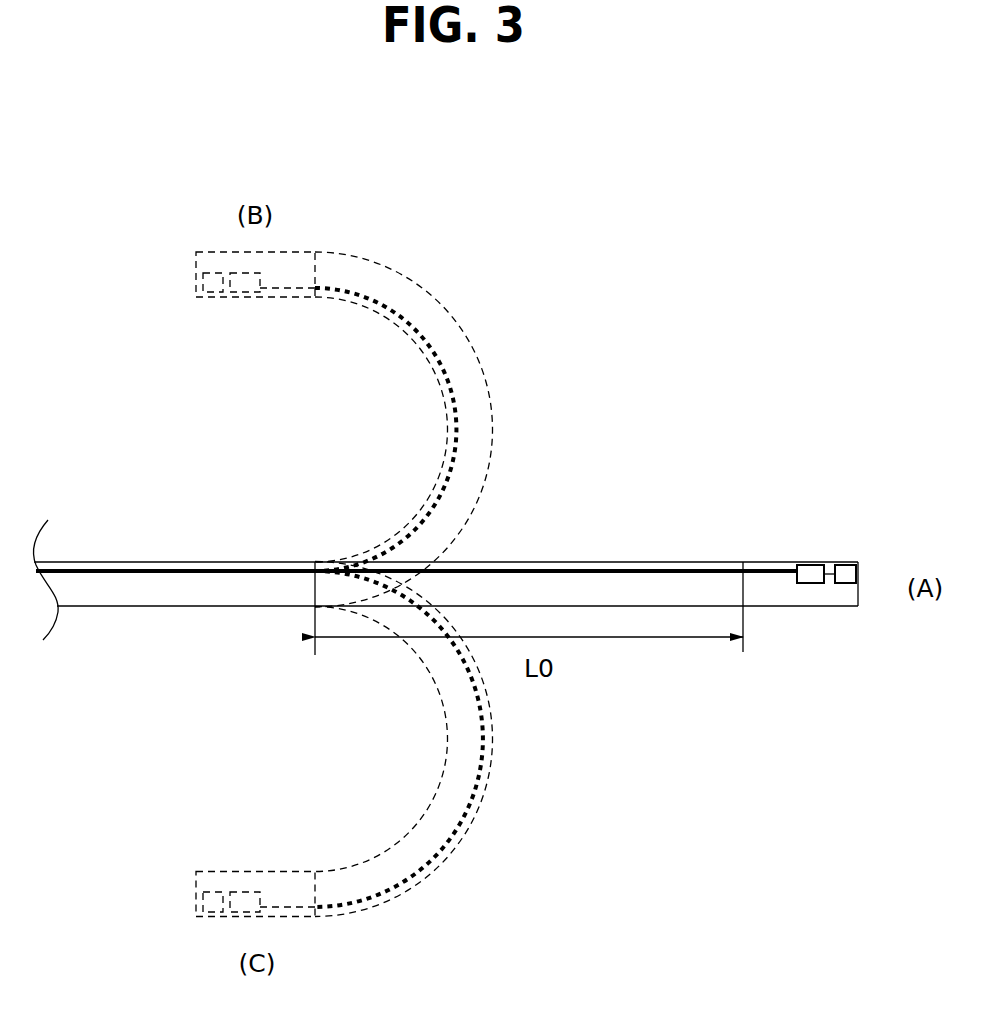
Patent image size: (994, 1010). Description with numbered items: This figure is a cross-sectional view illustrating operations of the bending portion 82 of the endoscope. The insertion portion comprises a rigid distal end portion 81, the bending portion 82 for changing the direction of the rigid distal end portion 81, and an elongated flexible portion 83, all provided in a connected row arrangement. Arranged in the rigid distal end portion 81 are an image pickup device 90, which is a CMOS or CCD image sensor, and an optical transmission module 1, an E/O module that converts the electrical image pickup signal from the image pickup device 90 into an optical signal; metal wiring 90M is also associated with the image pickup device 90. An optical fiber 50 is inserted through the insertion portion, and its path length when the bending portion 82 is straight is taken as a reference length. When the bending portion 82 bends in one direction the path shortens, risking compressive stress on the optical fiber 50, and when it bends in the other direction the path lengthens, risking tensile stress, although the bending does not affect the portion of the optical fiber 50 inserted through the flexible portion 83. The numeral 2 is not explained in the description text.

The insertion portion 2 is at (450, 569).
The optical fiber 50 is at (665, 571).
The flexible portion 83 is at (185, 562).
The bending portion 82 is at (588, 562).
The rigid distal end portion 81 is at (788, 562).
The metal wiring 90M is at (830, 565).
The image pickup device 90 is at (848, 583).
The optical transmission module 1 is at (813, 611).